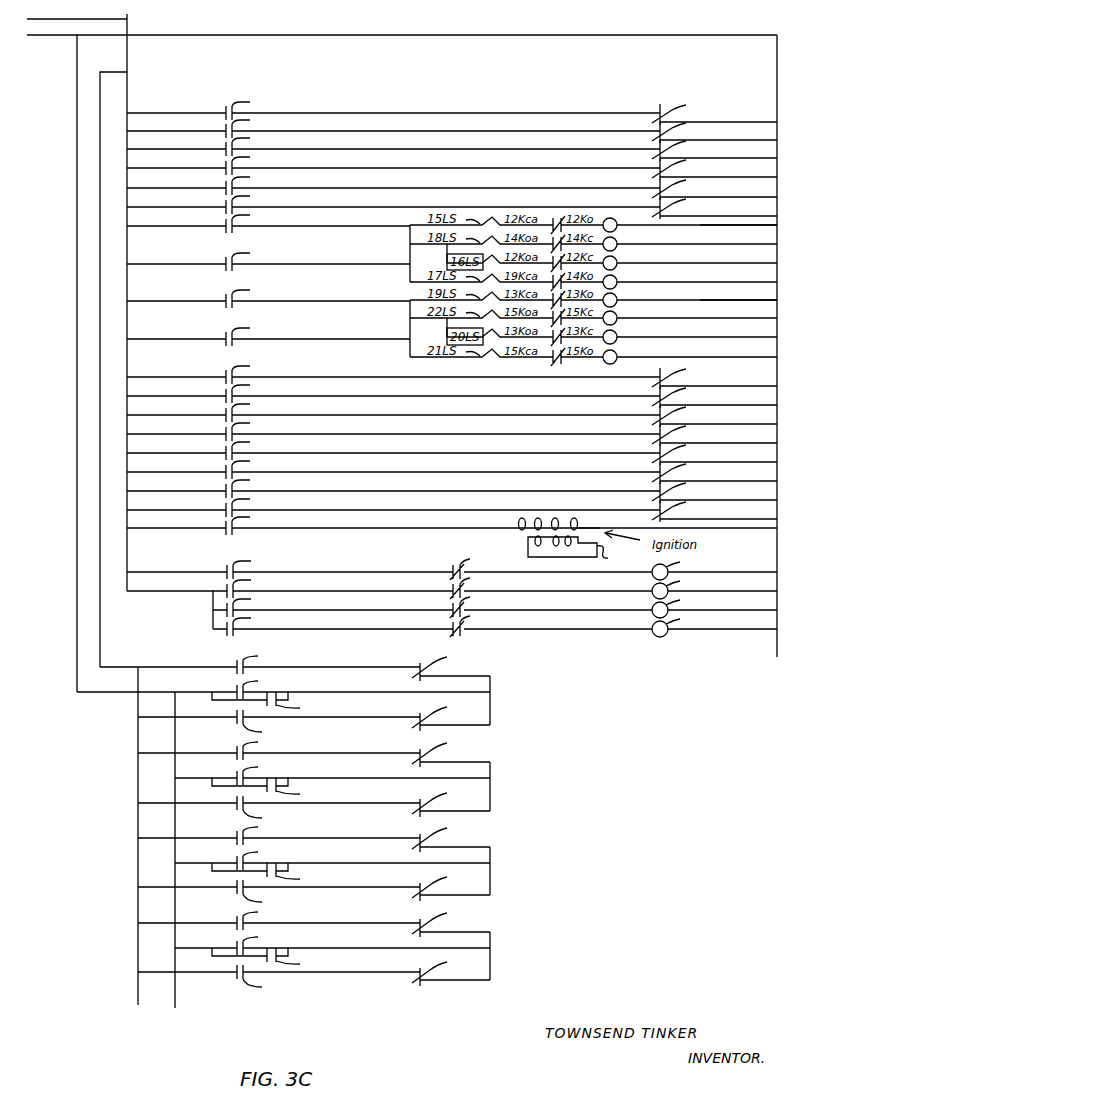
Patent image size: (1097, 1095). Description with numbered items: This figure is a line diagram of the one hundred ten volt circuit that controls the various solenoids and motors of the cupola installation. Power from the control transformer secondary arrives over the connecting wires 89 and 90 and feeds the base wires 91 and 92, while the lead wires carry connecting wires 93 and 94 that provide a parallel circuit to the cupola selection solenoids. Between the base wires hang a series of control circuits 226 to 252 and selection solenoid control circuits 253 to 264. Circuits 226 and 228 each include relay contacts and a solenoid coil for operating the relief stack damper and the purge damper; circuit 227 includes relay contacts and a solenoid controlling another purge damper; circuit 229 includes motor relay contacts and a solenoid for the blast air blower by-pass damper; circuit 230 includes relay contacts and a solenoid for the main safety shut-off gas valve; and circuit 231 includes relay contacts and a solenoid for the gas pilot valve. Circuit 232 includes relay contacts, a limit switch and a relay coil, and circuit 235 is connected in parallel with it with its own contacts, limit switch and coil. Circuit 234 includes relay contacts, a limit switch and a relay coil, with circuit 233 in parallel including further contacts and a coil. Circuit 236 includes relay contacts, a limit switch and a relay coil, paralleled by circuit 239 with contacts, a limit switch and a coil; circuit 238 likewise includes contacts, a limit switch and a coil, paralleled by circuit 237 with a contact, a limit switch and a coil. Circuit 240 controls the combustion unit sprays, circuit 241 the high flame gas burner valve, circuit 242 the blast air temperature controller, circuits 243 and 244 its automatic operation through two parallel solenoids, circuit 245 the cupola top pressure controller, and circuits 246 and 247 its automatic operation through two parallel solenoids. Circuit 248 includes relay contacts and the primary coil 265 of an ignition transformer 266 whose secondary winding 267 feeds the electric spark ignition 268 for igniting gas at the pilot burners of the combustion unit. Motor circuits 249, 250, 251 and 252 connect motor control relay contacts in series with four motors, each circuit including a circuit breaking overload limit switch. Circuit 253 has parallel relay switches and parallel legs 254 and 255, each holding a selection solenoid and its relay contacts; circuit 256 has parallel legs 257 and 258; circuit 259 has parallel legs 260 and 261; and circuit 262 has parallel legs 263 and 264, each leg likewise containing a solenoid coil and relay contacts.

The connecting wire 89 is at (130, 20).
The connecting wire 90 is at (51, 36).
The base wire 91 is at (127, 62).
The base wire 92 is at (776, 73).
The connecting wire 93 is at (77, 119).
The connecting wire 94 is at (100, 153).
The control circuit 226 is at (184, 114).
The control circuit 227 is at (196, 132).
The control circuit 228 is at (219, 151).
The control circuit 229 is at (184, 170).
The control circuit 230 is at (188, 190).
The control circuit 231 is at (203, 208).
The control circuit 232 is at (222, 228).
The control circuit 233 is at (691, 243).
The control circuit 234 is at (190, 266).
The control circuit 235 is at (410, 280).
The control circuit 236 is at (193, 304).
The control circuit 237 is at (673, 319).
The control circuit 238 is at (203, 342).
The control circuit 239 is at (410, 355).
The control circuit 240 is at (194, 379).
The control circuit 241 is at (193, 398).
The control circuit 242 is at (216, 417).
The control circuit 243 is at (188, 436).
The control circuit 244 is at (187, 455).
The control circuit 245 is at (201, 474).
The control circuit 246 is at (221, 493).
The control circuit 247 is at (176, 512).
The control circuit 248 is at (191, 530).
The motor circuit 249 is at (209, 574).
The motor circuit 250 is at (171, 594).
The motor circuit 251 is at (378, 612).
The motor circuit 252 is at (403, 632).
The selection solenoid control circuit 253 is at (396, 694).
The parallel leg 254 is at (356, 669).
The parallel leg 255 is at (358, 720).
The selection solenoid control circuit 256 is at (358, 779).
The parallel leg 257 is at (347, 754).
The parallel leg 258 is at (345, 805).
The selection solenoid control circuit 259 is at (362, 865).
The parallel leg 260 is at (322, 840).
The parallel leg 261 is at (355, 889).
The selection solenoid control circuit 262 is at (365, 949).
The parallel leg 263 is at (318, 925).
The parallel leg 264 is at (333, 975).
The primary coil 265 is at (517, 523).
The ignition transformer 266 is at (514, 545).
The secondary winding 267 is at (593, 519).
The electric spark ignition 268 is at (617, 557).